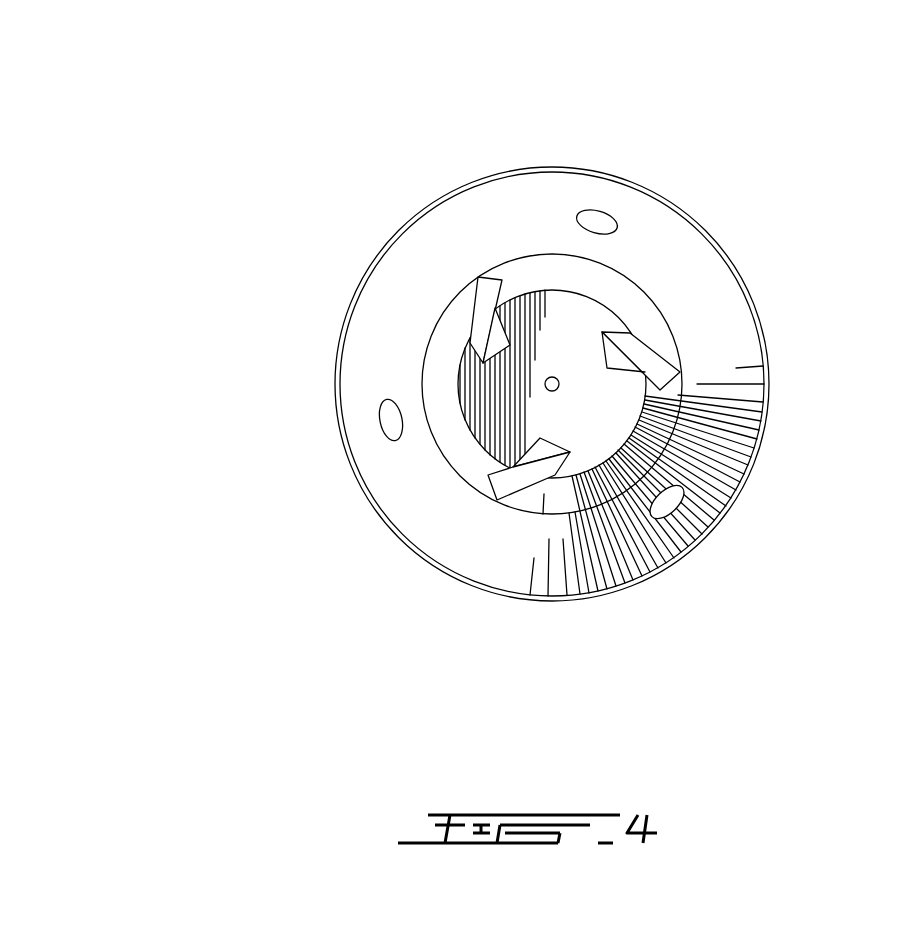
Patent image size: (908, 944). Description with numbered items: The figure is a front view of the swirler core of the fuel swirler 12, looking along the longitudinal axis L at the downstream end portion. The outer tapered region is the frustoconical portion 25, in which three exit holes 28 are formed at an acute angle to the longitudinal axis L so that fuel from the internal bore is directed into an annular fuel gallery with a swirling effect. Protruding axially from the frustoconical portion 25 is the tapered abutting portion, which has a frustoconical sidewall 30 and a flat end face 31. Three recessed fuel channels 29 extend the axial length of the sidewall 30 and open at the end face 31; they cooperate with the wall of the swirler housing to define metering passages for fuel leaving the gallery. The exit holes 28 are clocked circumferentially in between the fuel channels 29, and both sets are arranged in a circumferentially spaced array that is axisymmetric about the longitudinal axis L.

The fuel swirler 12 is at (203, 208).
The frustoconical portion 25 is at (430, 252).
The exit holes 28 is at (600, 212).
The fuel channels 29 is at (482, 328).
The frustoconical sidewall 30 is at (657, 430).
The flat end face 31 is at (592, 450).
The longitudinal axis L is at (552, 377).